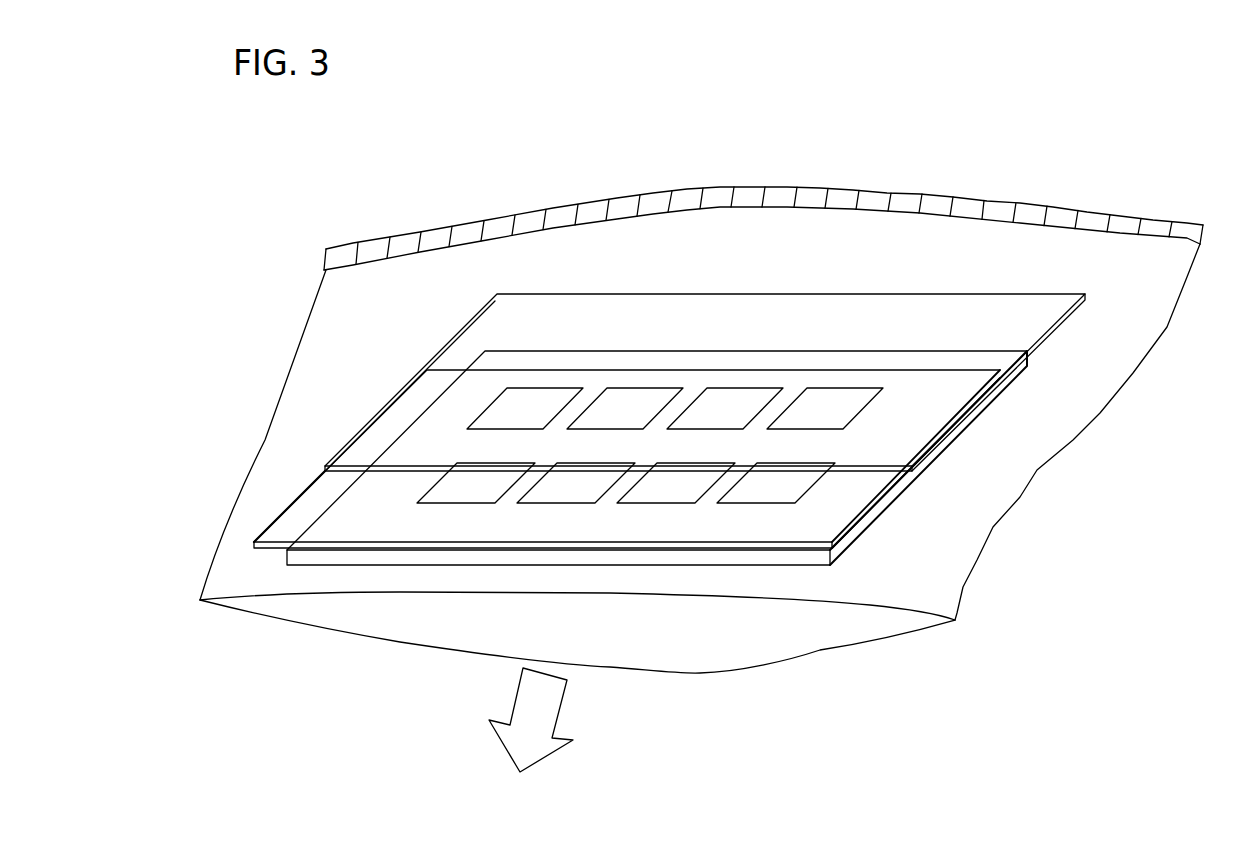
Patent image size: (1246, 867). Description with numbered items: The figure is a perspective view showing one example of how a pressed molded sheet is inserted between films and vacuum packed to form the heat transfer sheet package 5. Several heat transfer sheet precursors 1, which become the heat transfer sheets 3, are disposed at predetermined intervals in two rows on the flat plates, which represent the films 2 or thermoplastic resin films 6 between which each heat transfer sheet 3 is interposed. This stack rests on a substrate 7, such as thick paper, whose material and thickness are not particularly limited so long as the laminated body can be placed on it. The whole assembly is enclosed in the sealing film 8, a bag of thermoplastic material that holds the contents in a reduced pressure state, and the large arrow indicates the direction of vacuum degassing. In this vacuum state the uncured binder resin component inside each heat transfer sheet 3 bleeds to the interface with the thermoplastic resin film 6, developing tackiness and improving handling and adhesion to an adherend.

The heat transfer sheet precursor 1 is at (798, 445).
The heat transfer sheet 3 is at (770, 492).
The film 2 is at (642, 421).
The thermoplastic resin film 6 is at (492, 333).
The heat transfer sheet package 5 is at (1072, 140).
The substrate 7 is at (828, 552).
The sealing film 8 is at (857, 630).